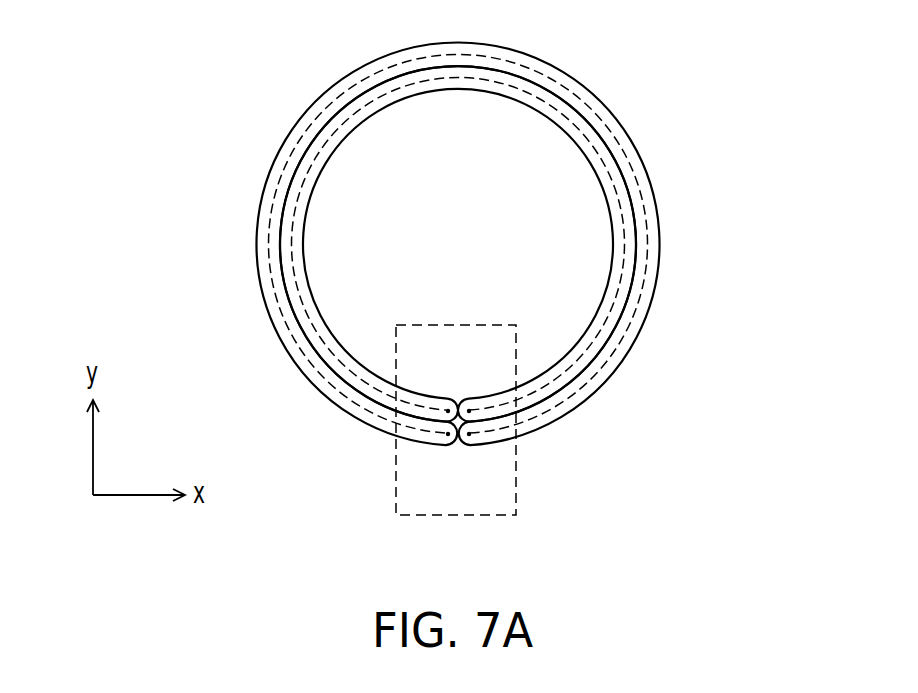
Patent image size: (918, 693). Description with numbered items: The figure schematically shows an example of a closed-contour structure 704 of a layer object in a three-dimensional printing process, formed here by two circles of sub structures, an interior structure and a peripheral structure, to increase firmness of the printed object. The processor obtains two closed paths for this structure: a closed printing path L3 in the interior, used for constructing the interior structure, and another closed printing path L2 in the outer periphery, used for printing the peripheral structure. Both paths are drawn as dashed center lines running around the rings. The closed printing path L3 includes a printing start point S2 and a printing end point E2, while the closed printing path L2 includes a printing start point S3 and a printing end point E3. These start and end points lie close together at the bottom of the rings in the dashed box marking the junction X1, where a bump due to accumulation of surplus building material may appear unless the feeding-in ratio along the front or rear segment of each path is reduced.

The closed-contour structure 704 is at (520, 225).
The closed printing path L2 is at (643, 297).
The closed printing path L3 is at (603, 332).
The printing start point S2 is at (447, 411).
The printing end point E2 is at (470, 411).
The printing start point S3 is at (447, 434).
The printing end point E3 is at (470, 434).
The junction X1 is at (516, 470).